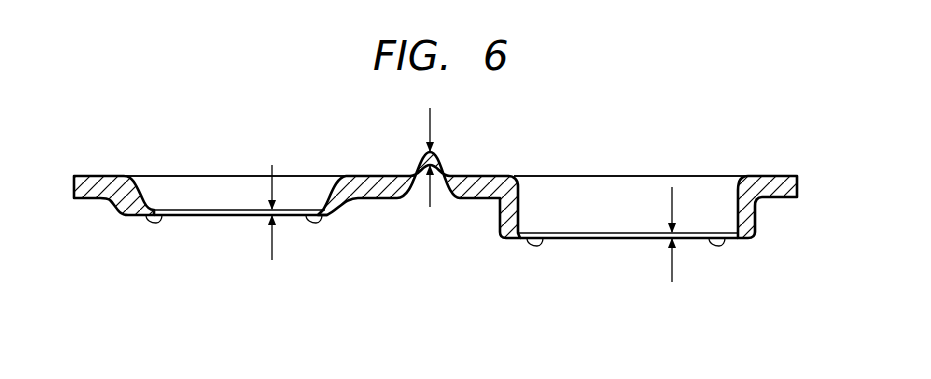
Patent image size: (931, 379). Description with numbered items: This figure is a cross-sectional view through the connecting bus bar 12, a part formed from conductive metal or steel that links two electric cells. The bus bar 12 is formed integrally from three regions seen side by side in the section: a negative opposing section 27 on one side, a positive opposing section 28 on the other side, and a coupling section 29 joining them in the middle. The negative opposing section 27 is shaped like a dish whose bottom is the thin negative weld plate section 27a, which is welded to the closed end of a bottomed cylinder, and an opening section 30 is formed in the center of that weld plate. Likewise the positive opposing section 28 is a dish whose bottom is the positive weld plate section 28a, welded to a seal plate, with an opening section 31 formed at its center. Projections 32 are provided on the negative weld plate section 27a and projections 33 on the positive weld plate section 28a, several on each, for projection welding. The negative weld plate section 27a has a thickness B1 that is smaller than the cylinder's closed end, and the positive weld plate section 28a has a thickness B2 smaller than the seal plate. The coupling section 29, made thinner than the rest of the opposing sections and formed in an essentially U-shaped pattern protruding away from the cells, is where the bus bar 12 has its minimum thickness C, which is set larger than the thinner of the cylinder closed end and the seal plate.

The connecting bus bar 12 is at (439, 198).
The negative opposing section 27 is at (92, 200).
The negative weld plate section 27a is at (165, 218).
The positive opposing section 28 is at (798, 180).
The positive weld plate section 28a is at (555, 238).
The coupling section 29 is at (417, 163).
The opening section 30 is at (217, 211).
The opening section 31 is at (603, 232).
The projections 32 is at (150, 220).
The projections 33 is at (533, 240).
The thickness of negative weld plate section B1 is at (270, 217).
The thickness of positive weld plate section B2 is at (665, 238).
The minimum thickness of connecting bus bar C is at (447, 148).